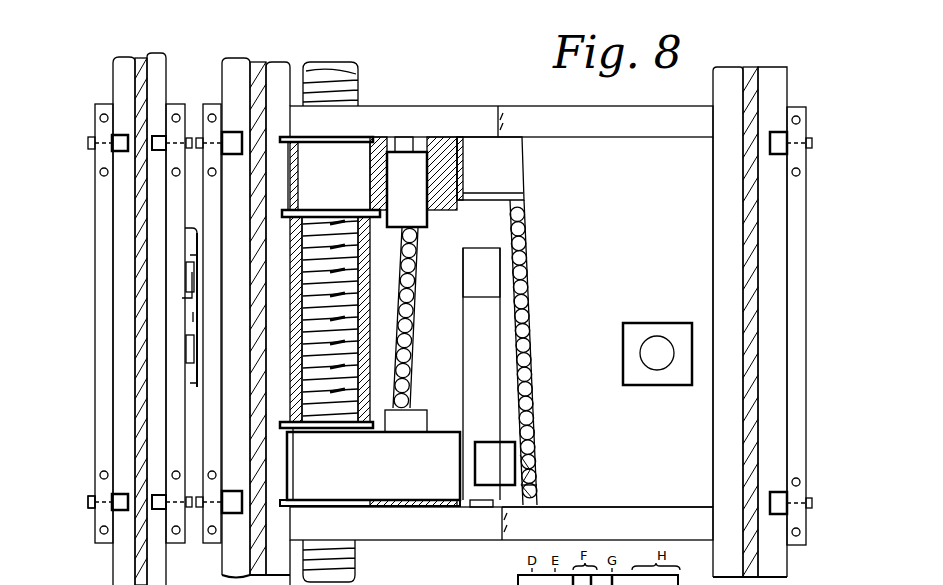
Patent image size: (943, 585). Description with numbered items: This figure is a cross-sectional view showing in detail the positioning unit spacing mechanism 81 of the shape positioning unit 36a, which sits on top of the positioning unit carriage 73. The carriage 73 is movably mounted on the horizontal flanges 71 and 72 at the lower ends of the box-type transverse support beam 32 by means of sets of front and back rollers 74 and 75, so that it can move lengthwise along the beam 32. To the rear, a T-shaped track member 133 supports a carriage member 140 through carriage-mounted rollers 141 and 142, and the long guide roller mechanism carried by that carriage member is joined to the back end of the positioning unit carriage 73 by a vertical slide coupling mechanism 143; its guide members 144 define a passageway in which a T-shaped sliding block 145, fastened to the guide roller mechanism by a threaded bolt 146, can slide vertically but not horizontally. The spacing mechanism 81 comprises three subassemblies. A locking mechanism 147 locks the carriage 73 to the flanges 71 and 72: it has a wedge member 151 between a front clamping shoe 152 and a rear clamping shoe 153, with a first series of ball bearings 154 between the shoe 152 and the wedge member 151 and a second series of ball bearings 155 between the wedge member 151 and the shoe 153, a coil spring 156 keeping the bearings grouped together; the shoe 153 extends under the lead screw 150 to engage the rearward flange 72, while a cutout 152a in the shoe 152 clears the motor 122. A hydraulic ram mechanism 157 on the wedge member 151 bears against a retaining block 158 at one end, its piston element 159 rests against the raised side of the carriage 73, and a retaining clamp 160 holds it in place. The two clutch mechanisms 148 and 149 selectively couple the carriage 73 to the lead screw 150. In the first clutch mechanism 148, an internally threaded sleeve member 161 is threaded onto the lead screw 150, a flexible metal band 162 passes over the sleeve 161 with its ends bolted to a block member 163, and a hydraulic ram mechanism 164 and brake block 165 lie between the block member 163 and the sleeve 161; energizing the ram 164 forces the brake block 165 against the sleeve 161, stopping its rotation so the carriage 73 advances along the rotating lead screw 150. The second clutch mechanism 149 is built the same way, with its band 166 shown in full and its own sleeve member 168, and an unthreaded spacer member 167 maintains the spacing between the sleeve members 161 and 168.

The T-shaped track member 133 is at (155, 64).
The transverse support beam 32 is at (258, 68).
The rearward flange 72 is at (275, 61).
The back rollers 75 is at (232, 130).
The lead screw 150 is at (320, 68).
The first clutch mechanism 148 is at (380, 135).
The brake block 165 is at (386, 133).
The flexible metal band 162 is at (300, 165).
The sleeve member 161 is at (350, 187).
The hydraulic ram mechanism 164 is at (420, 189).
The block member 163 is at (463, 175).
The positioning unit spacing mechanism 81 is at (529, 185).
The positioning unit carriage 73 is at (625, 107).
The front rollers 74 is at (778, 131).
The front flange 71 is at (732, 197).
The shape positioning unit 36a is at (807, 211).
The carriage member 140 is at (172, 203).
The slide coupling mechanism 143 is at (197, 233).
The guide members 144 is at (190, 262).
The T-shaped sliding block 145 is at (185, 297).
The threaded bolt 146 is at (193, 315).
The carriage-mounted roller 141 is at (163, 492).
The carriage-mounted roller 142 is at (117, 498).
The first series of ball bearings 154 is at (519, 218).
The second series of ball bearings 155 is at (412, 251).
The retaining block 158 is at (488, 268).
The locking mechanism 147 is at (534, 298).
The spacer member 167 is at (370, 295).
The rear clamping shoe 153 is at (378, 318).
The wedge member 151 is at (450, 349).
The hydraulic ram mechanism 157 is at (475, 378).
The front clamping shoe 152 is at (585, 334).
The cutout 152a is at (632, 372).
The motor 122 is at (663, 336).
The retaining clamp 160 is at (475, 457).
The second clutch mechanism 149 is at (380, 474).
The flexible metal band 166 is at (422, 482).
The piston element 159 is at (480, 510).
The sleeve member 168 is at (365, 507).
The coil spring 156 is at (533, 486).